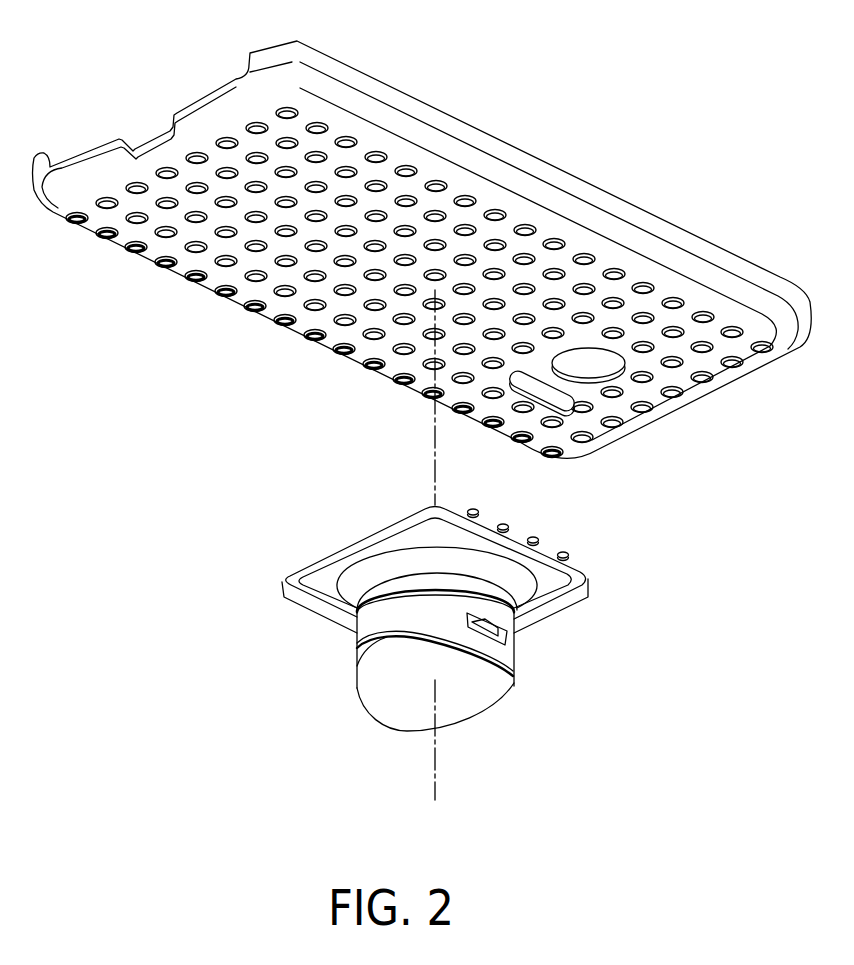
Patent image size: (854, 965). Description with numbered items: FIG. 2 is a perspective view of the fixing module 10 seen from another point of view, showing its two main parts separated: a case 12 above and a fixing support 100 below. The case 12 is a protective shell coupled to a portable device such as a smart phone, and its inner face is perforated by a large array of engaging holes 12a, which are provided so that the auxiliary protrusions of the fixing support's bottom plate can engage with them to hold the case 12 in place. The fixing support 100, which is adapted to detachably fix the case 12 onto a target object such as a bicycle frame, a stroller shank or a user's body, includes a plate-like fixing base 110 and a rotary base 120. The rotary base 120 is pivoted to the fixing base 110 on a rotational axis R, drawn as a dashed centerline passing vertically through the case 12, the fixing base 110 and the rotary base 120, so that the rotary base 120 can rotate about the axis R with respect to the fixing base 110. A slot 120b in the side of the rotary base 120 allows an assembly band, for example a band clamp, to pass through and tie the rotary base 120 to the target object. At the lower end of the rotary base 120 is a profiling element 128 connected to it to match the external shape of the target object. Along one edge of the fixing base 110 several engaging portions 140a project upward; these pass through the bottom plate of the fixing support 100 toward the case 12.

The fixing module 10 is at (422, 373).
The case 12 is at (422, 249).
The engaging holes 12a is at (386, 188).
The fixing support 100 is at (475, 606).
The fixing base 110 is at (475, 570).
The rotary base 120 is at (492, 660).
The slot 120b is at (497, 618).
The profiling element 128 is at (510, 677).
The engaging portions 140a is at (566, 553).
The rotational axis R is at (451, 552).